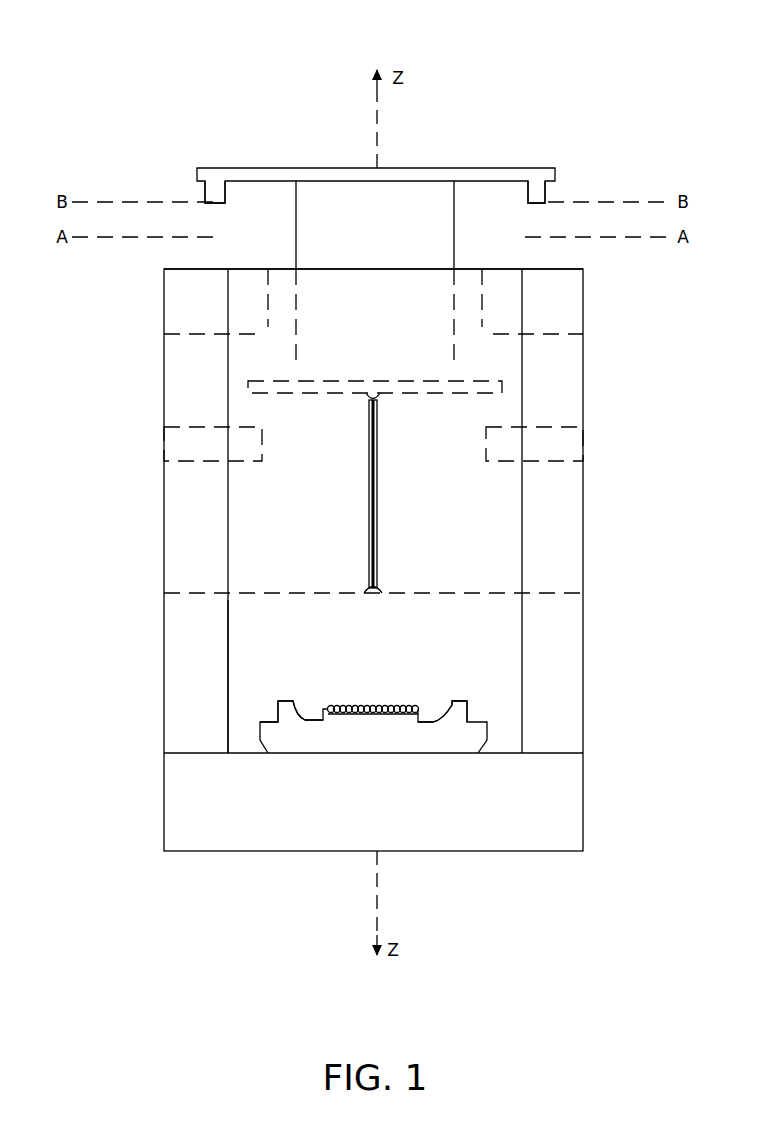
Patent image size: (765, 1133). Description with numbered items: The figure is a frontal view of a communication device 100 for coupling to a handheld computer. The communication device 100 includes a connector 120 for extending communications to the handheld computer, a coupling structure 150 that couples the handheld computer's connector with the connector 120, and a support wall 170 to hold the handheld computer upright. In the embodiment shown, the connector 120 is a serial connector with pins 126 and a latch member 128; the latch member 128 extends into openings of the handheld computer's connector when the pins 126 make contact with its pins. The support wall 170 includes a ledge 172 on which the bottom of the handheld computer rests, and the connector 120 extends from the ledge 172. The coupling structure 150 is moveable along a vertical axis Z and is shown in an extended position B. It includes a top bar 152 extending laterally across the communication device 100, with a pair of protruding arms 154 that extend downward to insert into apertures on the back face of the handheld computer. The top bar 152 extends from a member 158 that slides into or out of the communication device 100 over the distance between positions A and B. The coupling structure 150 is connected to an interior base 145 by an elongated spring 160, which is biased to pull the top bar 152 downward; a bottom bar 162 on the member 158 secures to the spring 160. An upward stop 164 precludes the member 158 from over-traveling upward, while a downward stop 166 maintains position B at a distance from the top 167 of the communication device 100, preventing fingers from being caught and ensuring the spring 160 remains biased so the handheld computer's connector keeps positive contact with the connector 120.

The communication device 100 is at (130, 822).
The connector 120 is at (460, 728).
The pins 126 is at (373, 707).
The latch member 128 is at (287, 700).
The interior base 145 is at (427, 590).
The coupling structure 150 is at (567, 118).
The top bar 152 is at (337, 168).
The protruding arms 154 is at (210, 187).
The member 158 is at (375, 337).
The elongated spring 160 is at (375, 495).
The bottom bar 162 is at (478, 385).
The upward stop 164 is at (195, 303).
The downward stop 166 is at (195, 443).
The top 167 is at (482, 272).
The support wall 170 is at (240, 615).
The ledge 172 is at (250, 752).